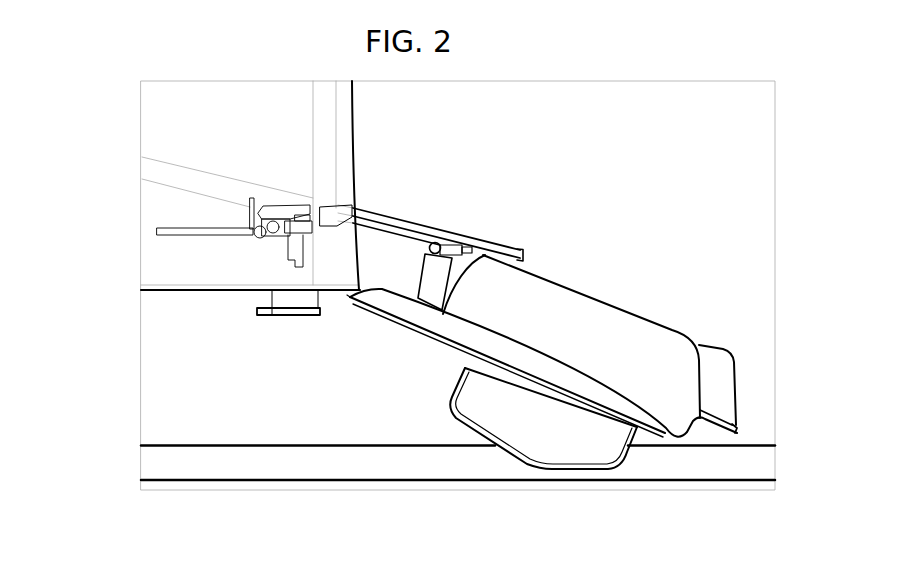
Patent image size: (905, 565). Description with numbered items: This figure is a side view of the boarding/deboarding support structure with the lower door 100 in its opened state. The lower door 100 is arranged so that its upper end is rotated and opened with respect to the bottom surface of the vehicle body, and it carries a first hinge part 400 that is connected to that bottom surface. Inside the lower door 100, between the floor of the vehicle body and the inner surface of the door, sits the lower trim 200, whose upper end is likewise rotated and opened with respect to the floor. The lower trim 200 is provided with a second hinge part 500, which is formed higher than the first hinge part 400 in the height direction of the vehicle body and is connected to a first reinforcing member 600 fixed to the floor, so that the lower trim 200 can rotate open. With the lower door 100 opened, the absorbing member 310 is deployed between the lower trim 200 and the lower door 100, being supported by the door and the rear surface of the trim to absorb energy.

The lower door 100 is at (653, 418).
The lower trim 200 is at (500, 245).
The absorbing member 310 is at (440, 266).
The first hinge part 400 is at (347, 295).
The second hinge part 500 is at (257, 227).
The first reinforcing member 600 is at (290, 313).